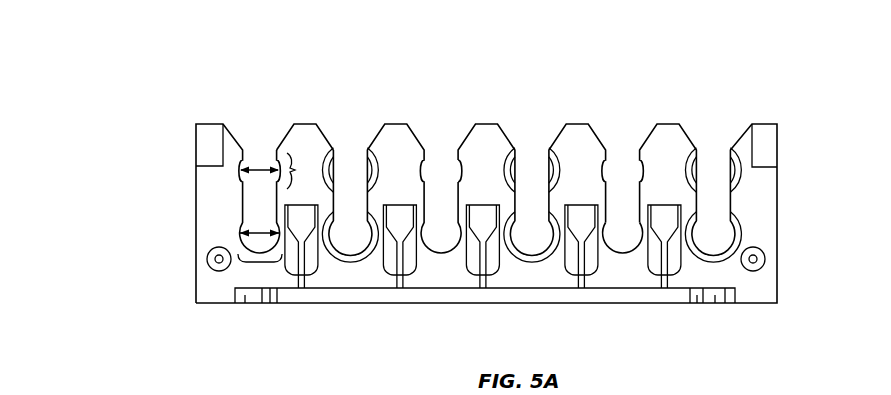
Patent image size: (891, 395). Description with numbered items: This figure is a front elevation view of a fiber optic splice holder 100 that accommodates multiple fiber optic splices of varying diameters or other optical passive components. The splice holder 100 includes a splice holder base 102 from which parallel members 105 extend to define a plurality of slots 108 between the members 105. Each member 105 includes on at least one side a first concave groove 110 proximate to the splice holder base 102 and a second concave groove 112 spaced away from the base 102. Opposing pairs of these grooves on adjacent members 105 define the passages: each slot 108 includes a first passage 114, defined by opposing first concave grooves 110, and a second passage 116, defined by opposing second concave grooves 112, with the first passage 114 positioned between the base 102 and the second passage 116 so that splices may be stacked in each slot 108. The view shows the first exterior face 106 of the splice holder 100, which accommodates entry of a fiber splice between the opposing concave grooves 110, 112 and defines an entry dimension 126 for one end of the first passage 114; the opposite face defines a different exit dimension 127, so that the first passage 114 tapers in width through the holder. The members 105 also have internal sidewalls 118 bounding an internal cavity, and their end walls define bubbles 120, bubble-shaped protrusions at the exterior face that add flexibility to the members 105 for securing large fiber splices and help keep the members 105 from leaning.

The fiber optic splice holder 100 is at (495, 196).
The splice holder base 102 is at (362, 295).
The parallel members 105 is at (305, 124).
The first exterior face 106 is at (215, 287).
The slots 108 is at (700, 128).
The first concave groove 110 is at (258, 229).
The second concave groove 112 is at (260, 168).
The first passage 114 is at (260, 262).
The second passage 116 is at (301, 167).
The internal sidewalls 118 is at (458, 170).
The bubbles 120 is at (485, 250).
The entry dimension 126 is at (742, 233).
The exit dimension 127 is at (623, 253).